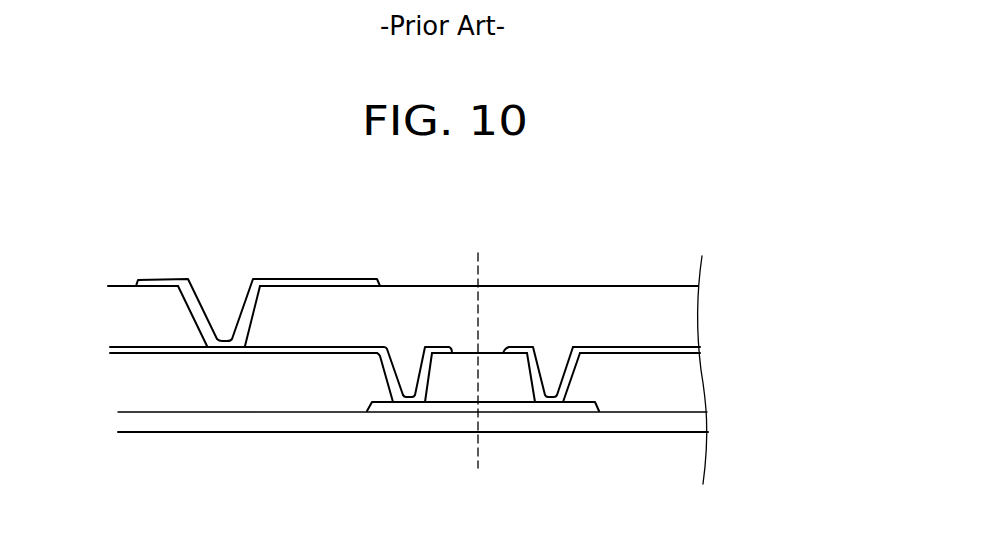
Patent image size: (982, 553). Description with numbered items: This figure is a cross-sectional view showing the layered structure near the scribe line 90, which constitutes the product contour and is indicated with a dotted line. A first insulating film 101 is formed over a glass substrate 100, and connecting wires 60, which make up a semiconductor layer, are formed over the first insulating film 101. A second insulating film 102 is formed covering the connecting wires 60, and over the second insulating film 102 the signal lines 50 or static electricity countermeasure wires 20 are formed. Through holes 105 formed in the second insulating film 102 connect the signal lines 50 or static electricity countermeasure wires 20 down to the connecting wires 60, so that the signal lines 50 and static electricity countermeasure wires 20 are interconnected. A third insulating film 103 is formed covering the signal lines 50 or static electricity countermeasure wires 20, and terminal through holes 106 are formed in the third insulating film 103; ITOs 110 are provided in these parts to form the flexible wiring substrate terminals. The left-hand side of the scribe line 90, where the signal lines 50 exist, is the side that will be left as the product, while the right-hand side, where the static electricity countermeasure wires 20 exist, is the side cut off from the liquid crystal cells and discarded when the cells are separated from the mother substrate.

The glass substrate 100 is at (697, 458).
The first insulating film 101 is at (695, 423).
The second insulating film 102 is at (690, 387).
The third insulating film 103 is at (663, 311).
The through hole 105 is at (552, 358).
The terminal through hole 106 is at (217, 299).
The ITO 110 is at (287, 280).
The static electricity countermeasure wire 20 is at (672, 347).
The signal line 50 is at (133, 347).
The connecting wire 60 is at (520, 413).
The scribe line 90 is at (478, 263).